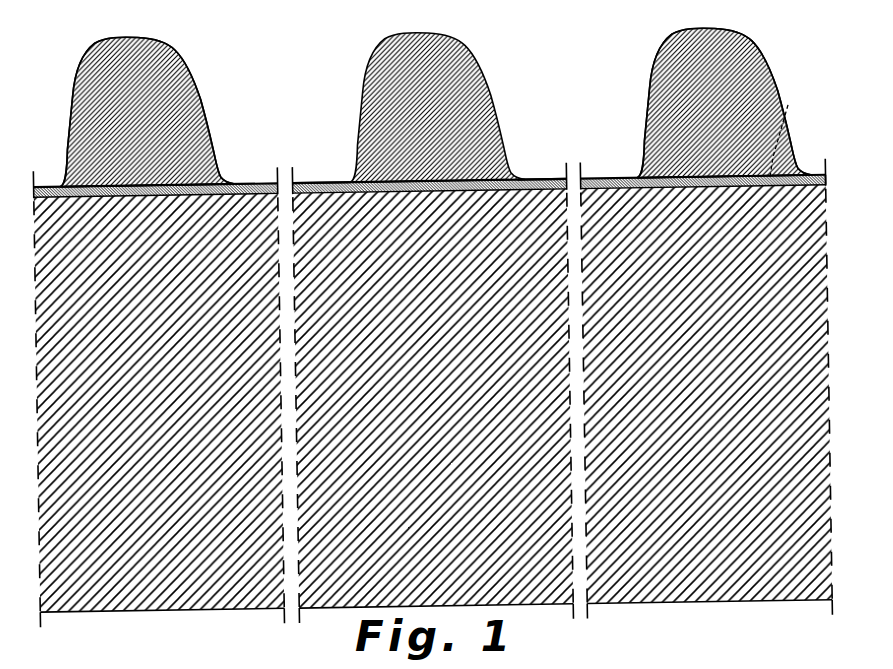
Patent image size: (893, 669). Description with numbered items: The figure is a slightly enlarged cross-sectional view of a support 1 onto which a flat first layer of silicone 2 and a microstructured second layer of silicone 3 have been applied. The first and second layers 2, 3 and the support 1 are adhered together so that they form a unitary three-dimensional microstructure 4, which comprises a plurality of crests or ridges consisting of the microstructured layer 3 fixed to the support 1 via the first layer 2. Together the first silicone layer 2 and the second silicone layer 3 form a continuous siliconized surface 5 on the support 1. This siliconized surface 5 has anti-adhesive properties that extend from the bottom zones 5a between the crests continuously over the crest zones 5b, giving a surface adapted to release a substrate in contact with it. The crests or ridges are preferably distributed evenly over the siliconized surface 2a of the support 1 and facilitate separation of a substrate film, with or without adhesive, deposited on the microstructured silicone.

The support 1 is at (119, 560).
The first layer of silicone 2 is at (251, 179).
The siliconized surface of the support 2a is at (820, 181).
The microstructured second layer of silicone 3 is at (434, 93).
The unitary three-dimensional microstructure 4 is at (514, 53).
The continuous siliconized surface 5 is at (388, 52).
The bottom zones 5a is at (328, 179).
The crest zones 5b is at (197, 61).